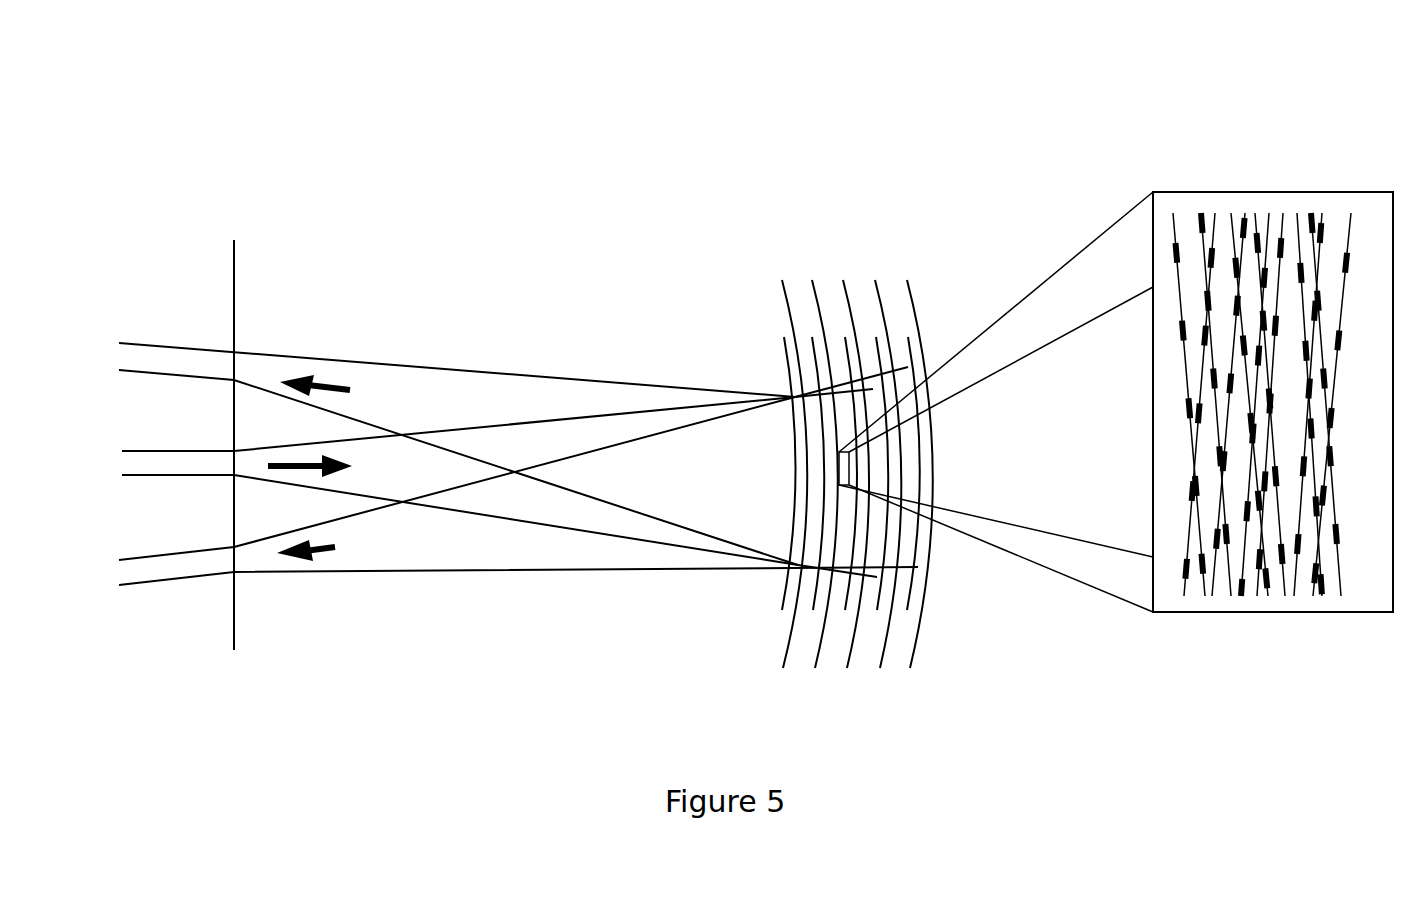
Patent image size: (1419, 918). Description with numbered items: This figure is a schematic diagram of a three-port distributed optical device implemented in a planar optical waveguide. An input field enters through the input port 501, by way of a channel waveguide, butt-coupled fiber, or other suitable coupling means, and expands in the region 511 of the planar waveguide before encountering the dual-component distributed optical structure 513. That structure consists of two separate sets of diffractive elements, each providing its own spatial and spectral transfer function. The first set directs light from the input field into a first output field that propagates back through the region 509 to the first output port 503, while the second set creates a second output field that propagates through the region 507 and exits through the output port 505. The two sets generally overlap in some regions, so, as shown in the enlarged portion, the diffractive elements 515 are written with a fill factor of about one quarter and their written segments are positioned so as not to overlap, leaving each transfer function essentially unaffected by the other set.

The input port 501 is at (233, 463).
The first output port 503 is at (233, 558).
The output port 505 is at (233, 370).
The region 507 is at (354, 395).
The region 509 is at (352, 546).
The region 511 is at (342, 465).
The dual-component distributed optical structure 513 is at (750, 233).
The diffractive elements 515 is at (1325, 223).